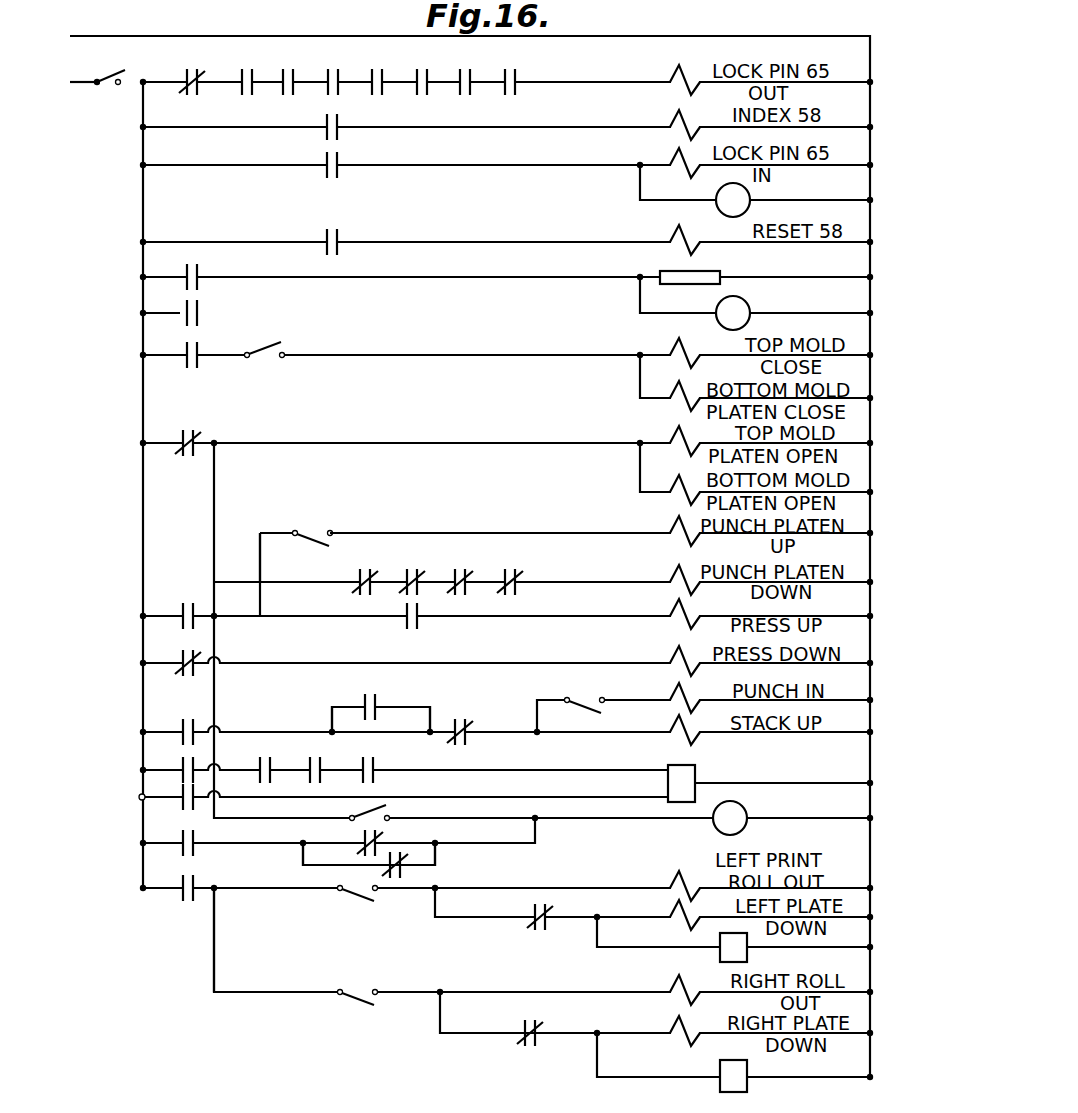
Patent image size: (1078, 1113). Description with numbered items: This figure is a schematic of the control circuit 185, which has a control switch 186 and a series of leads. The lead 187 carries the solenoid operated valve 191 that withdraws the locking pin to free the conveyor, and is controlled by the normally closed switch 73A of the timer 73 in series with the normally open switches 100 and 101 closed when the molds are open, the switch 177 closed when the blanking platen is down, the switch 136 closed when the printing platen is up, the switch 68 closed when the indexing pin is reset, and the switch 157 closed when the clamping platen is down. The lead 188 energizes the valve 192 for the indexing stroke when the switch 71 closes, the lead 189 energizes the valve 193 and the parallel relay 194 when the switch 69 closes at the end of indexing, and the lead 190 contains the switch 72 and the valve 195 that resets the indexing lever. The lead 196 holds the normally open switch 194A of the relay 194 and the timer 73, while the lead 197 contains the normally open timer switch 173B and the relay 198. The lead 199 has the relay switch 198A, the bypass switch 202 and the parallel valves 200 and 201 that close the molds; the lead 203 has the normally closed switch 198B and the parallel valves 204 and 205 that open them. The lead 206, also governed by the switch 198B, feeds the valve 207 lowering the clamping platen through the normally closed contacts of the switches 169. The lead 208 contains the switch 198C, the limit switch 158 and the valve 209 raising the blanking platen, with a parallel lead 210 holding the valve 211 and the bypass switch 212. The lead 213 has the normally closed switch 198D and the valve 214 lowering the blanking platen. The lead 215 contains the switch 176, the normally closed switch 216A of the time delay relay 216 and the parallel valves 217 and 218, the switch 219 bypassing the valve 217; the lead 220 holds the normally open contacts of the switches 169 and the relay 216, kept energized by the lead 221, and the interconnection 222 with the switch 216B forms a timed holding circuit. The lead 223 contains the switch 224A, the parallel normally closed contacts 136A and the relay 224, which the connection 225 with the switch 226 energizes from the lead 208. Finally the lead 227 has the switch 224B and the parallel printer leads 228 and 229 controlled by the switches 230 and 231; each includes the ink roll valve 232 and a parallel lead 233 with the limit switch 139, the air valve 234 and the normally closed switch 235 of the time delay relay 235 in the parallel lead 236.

The circuit 185 is at (79, 78).
The control switch 186 is at (110, 74).
The lead 187 is at (167, 86).
The lead 188 is at (226, 112).
The normally closed switch of the timer 73A is at (196, 70).
The normally open switch 100 is at (247, 70).
The normally open switch 101 is at (289, 72).
The switch 177 is at (336, 72).
The switch 136 is at (423, 70).
The switch 68 is at (466, 72).
The switch 157 is at (511, 72).
The solenoid operated valve 191 is at (683, 70).
The solenoid operated valve 192 is at (680, 115).
The normally open switch 71 is at (329, 115).
The lead 189 is at (188, 163).
The normally open switch 69 is at (331, 160).
The solenoid operated valve 193 is at (674, 153).
The relay 194 is at (718, 197).
The lead 190 is at (197, 240).
The switch 72 is at (334, 230).
The solenoid operated valve 195 is at (675, 230).
The lead 196 is at (163, 275).
The normally open switch of the relay 194A is at (196, 273).
The timer 73 is at (689, 271).
The lead 197 is at (163, 311).
The timer switch 173B is at (196, 309).
The relay 198 is at (744, 312).
The lead 199 is at (163, 353).
The relay switch 198A is at (196, 351).
The manually operated switch 202 is at (270, 350).
The solenoid-operated valve 200 is at (672, 344).
The solenoid-operated valve 201 is at (672, 388).
The lead 203 is at (162, 441).
The normally closed switch of the relay 198B is at (193, 437).
The solenoid-operated valve 204 is at (664, 430).
The solenoid-operated valve 205 is at (672, 481).
The parallel lead 210 is at (274, 531).
The manually operated switch 212 is at (318, 532).
The solenoid operated valve 211 is at (692, 522).
The lead 206 is at (236, 582).
The switches 169 is at (418, 575).
The solenoid-operated valve 207 is at (665, 569).
The lead 208 is at (162, 614).
The normally open switch 198C is at (193, 611).
The solenoid operated valve 209 is at (664, 606).
The normally open limit switch 158 is at (410, 625).
The lead 213 is at (161, 661).
The normally closed relay switch 198D is at (190, 670).
The solenoid operated valve 214 is at (664, 652).
The lead 215 is at (162, 730).
The normally open switch 176 is at (197, 722).
The interconnection 222 is at (330, 718).
The normally open switch of the time delay relay 216B is at (367, 698).
The normally closed switch of the time delay relay 216A is at (459, 719).
The manually operated switch 219 is at (583, 699).
The solenoid operated valve 217 is at (692, 690).
The solenoid operated valve 218 is at (692, 722).
The lead 220 is at (162, 768).
The lead 221 is at (161, 795).
The time delay relay 216 is at (693, 778).
The connection 225 is at (258, 818).
The manually operated switch 226 is at (378, 808).
The relay 224 is at (741, 813).
The lead 223 is at (165, 833).
The normally open switch of the relay 224A is at (195, 838).
The normally closed contacts 136A is at (372, 836).
The lead 227 is at (162, 886).
The normally open switch of the relay 224B is at (212, 896).
The parallel lead 228 is at (280, 892).
The manually operated switch 230 is at (345, 902).
The solenoid valve 232 is at (692, 980).
The solenoid air valve 234 is at (692, 908).
The parallel lead 233 is at (570, 920).
The normally open limit switch 139 is at (530, 1024).
The time delay relay 235 is at (718, 937).
The parallel lead 236 is at (780, 949).
The parallel lead 229 is at (280, 994).
The manually operated switch 231 is at (345, 1006).